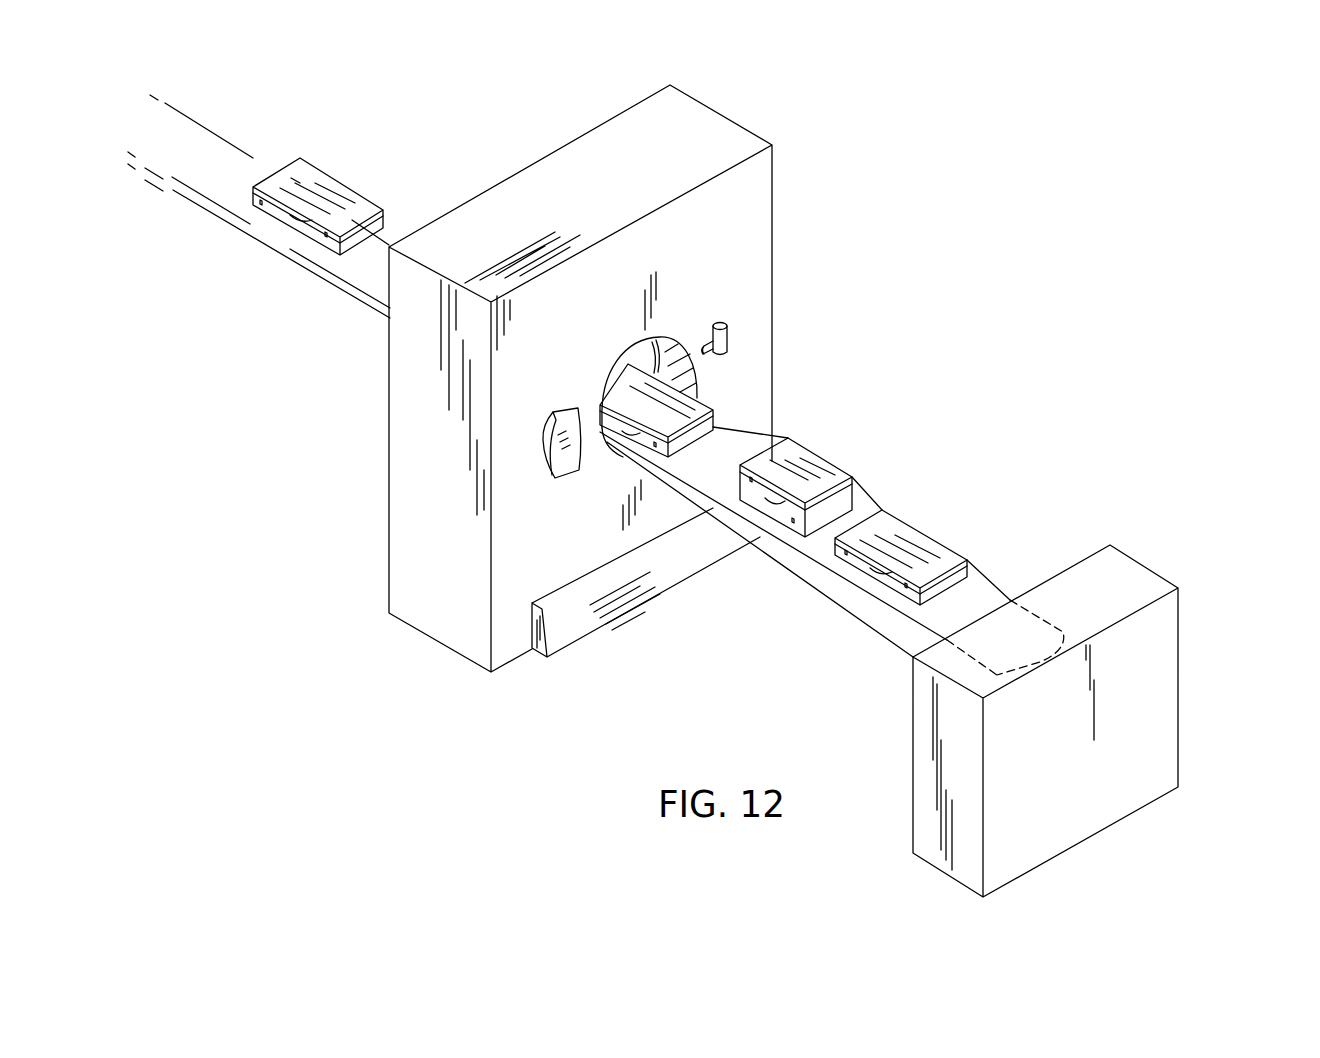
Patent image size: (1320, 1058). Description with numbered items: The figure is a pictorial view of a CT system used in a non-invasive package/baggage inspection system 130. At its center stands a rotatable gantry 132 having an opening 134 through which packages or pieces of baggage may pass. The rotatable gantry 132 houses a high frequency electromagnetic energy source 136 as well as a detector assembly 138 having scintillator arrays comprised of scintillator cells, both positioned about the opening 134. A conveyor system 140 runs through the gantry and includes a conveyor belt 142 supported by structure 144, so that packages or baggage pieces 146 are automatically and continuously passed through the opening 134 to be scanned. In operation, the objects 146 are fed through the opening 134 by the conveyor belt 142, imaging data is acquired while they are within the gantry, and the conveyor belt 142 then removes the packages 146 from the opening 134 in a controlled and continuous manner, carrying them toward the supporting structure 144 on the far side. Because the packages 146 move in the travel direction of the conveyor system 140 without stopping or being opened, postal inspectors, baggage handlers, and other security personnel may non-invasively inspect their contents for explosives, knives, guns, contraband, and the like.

The package/baggage inspection system 130 is at (1050, 402).
The rotatable gantry 132 is at (690, 250).
The opening 134 is at (686, 386).
The high frequency electromagnetic energy source 136 is at (729, 338).
The detector assembly 138 is at (562, 430).
The conveyor system 140 is at (180, 232).
The conveyor belt 142 is at (363, 270).
The structure 144 is at (1179, 655).
The packages or baggage pieces 146 is at (320, 190).